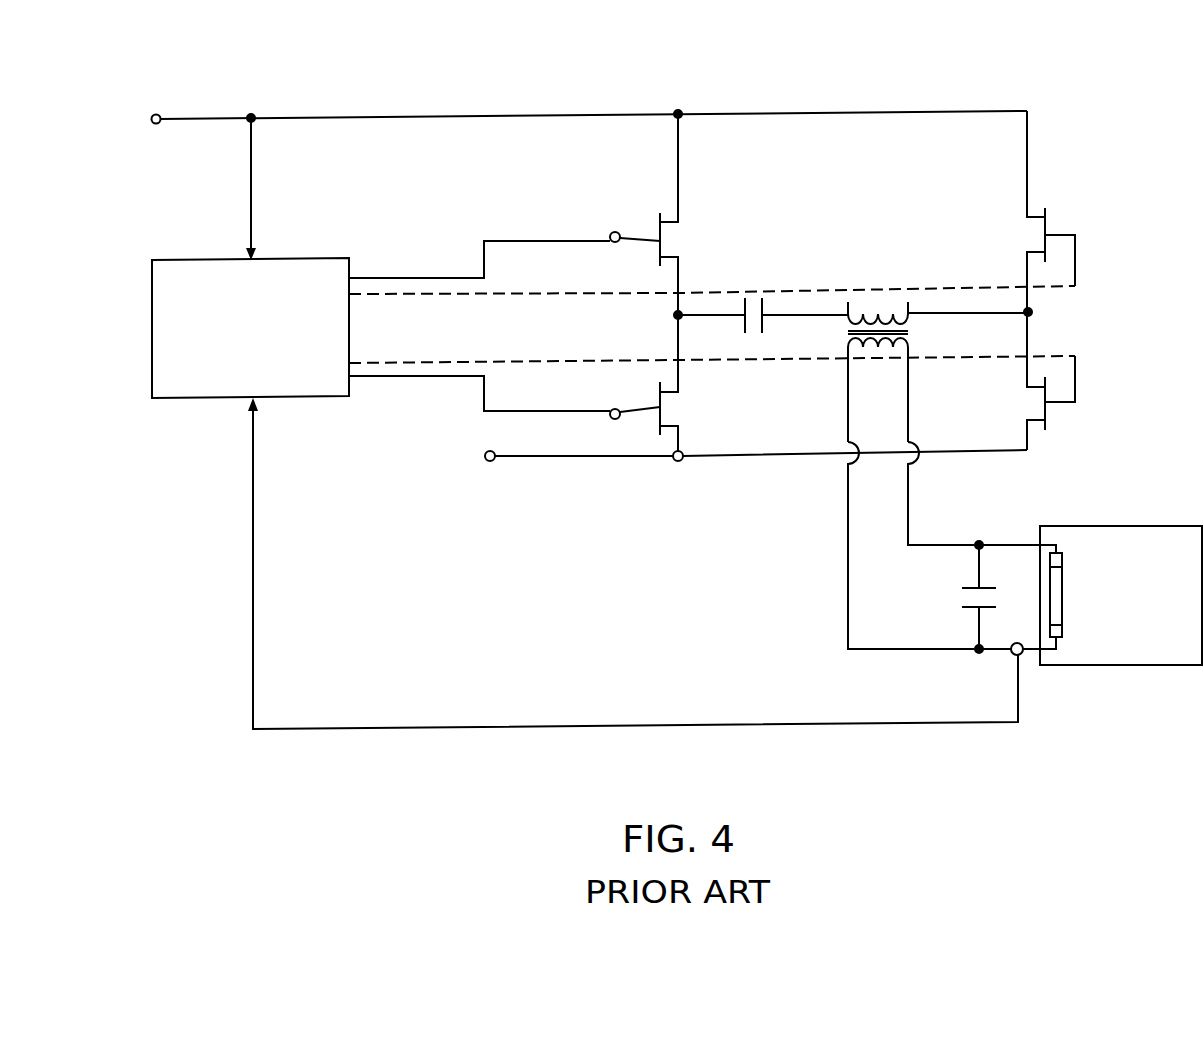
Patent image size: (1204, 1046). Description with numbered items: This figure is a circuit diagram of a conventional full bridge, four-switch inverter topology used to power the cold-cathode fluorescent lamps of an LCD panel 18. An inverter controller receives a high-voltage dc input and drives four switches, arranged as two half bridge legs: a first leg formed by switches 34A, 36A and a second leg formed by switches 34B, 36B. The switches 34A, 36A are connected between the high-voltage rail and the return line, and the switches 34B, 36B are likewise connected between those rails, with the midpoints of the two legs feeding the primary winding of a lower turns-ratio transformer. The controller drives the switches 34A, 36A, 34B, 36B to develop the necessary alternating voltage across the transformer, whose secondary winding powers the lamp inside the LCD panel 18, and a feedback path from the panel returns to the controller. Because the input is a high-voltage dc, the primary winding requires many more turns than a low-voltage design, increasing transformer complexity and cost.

The switch 34A is at (680, 243).
The switch 36A is at (680, 410).
The switch 34B is at (1080, 262).
The switch 36B is at (1080, 380).
The LCD panel 18 is at (1146, 524).